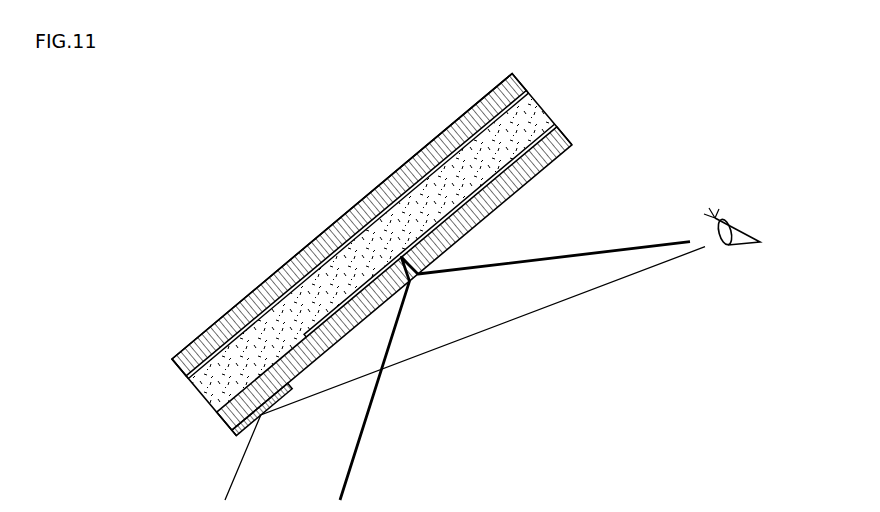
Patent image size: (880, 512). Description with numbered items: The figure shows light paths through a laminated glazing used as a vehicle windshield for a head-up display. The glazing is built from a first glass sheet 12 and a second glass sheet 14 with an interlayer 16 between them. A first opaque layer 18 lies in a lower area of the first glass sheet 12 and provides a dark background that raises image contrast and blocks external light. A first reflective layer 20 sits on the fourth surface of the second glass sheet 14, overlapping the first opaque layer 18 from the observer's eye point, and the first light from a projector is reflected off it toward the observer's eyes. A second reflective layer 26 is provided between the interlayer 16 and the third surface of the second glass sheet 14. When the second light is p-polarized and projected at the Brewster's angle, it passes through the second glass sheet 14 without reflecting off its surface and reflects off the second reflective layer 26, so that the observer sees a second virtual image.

The first glass sheet 12 is at (378, 178).
The second glass sheet 14 is at (524, 173).
The interlayer 16 is at (520, 122).
The first opaque layer 18 is at (233, 310).
The first reflective layer 20 is at (270, 413).
The second reflective layer 26 is at (365, 278).